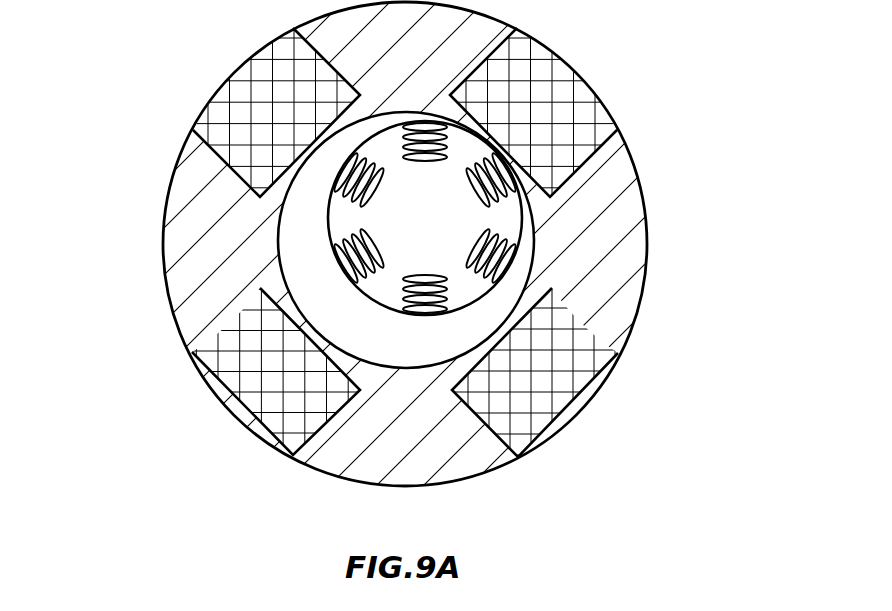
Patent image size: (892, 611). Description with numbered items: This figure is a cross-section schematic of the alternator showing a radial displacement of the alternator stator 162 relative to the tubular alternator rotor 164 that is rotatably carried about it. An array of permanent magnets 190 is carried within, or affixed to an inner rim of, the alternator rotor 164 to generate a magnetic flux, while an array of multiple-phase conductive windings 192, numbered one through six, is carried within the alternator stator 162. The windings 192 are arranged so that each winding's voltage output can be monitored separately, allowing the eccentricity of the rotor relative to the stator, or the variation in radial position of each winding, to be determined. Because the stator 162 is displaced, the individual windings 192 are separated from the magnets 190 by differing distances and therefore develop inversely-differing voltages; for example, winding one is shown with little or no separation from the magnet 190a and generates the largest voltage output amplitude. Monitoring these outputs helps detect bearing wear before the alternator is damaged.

The magnet 190a is at (598, 90).
The alternator rotor 164 is at (608, 173).
The conductive windings 192 is at (512, 258).
The alternator stator 162 is at (327, 223).
The permanent magnets 190 is at (605, 385).